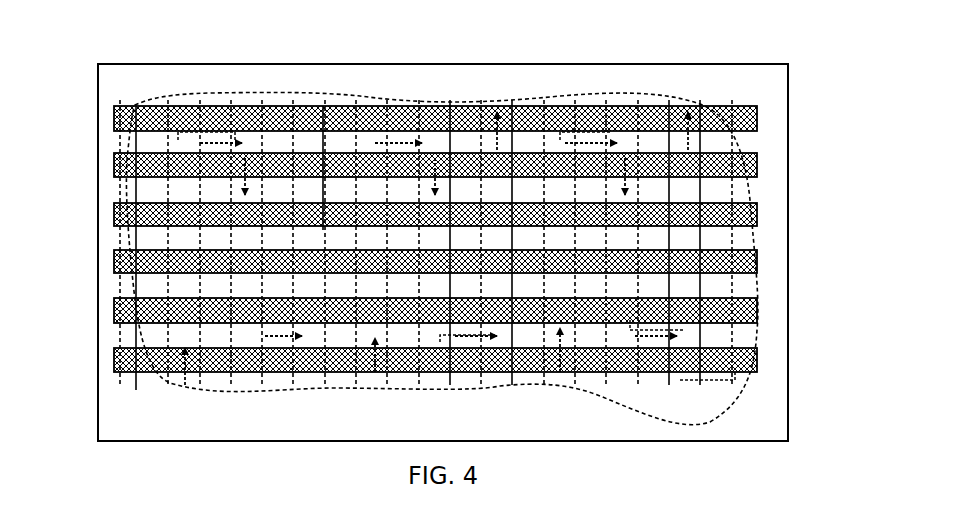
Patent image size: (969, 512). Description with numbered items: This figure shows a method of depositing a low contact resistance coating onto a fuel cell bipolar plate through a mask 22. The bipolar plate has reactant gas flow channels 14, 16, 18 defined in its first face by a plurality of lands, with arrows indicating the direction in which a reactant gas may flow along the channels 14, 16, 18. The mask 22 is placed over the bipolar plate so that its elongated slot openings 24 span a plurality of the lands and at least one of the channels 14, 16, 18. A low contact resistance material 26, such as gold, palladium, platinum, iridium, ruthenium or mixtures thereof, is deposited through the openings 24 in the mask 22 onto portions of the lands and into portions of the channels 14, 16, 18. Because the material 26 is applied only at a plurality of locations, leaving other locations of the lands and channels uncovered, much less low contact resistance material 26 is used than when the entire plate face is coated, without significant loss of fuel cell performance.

The reactant gas flow channel 14 is at (168, 145).
The reactant gas flow channel 16 is at (357, 145).
The reactant gas flow channel 18 is at (547, 140).
The mask 22 is at (770, 138).
The elongated slot openings 24 is at (757, 107).
The low contact resistance material 26 is at (757, 163).